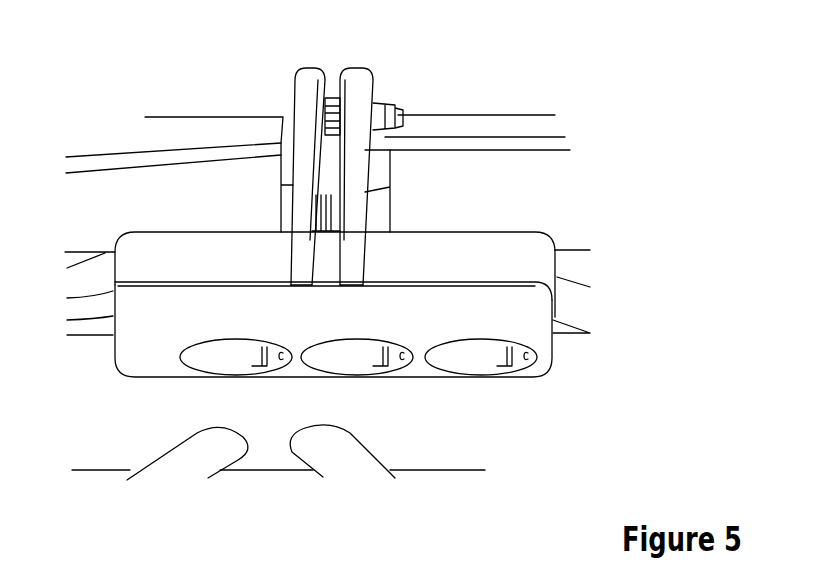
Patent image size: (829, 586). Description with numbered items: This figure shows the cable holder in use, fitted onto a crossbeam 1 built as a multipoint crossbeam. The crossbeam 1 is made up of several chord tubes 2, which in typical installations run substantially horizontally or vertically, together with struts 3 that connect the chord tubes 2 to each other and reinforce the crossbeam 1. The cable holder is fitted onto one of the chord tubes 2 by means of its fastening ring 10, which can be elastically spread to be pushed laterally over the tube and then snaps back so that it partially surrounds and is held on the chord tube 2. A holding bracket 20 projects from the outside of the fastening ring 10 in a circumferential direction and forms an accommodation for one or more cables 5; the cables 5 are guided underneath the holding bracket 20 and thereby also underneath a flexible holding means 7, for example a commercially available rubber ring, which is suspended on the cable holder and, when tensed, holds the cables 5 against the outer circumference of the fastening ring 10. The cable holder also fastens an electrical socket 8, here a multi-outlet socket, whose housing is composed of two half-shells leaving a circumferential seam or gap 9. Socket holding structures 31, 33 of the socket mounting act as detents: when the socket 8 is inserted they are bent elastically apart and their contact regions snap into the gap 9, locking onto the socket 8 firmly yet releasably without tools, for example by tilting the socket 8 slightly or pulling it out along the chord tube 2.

The crossbeam 1 is at (467, 99).
The chord tube 2 is at (458, 125).
The strut 3 is at (307, 452).
The cable 5 is at (192, 155).
The flexible holding means 7 is at (328, 100).
The electrical socket 8 is at (487, 248).
The gap 9 is at (508, 282).
The fastening ring 10 is at (289, 115).
The holding bracket 20 is at (340, 148).
The socket holding structure 31 is at (297, 263).
The socket holding structure 33 is at (356, 265).